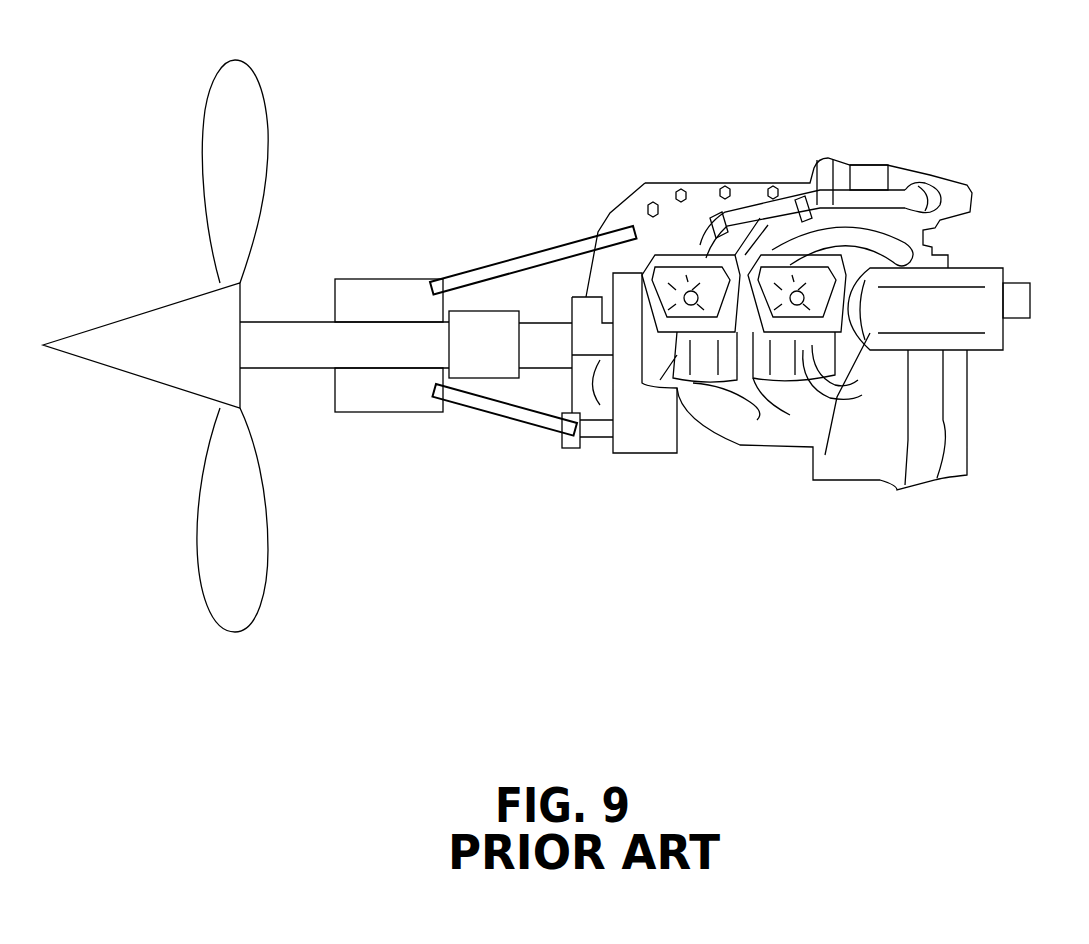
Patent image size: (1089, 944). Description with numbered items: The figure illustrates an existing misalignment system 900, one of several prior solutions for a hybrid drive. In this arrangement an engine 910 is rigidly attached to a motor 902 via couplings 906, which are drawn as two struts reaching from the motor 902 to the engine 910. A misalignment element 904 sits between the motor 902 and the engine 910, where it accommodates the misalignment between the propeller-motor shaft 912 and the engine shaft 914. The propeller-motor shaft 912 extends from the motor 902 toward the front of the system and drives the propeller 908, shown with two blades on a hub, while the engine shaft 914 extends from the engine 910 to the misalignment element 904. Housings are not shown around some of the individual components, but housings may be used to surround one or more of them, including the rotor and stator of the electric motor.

The misalignment system 900 is at (607, 72).
The motor 902 is at (389, 345).
The misalignment element 904 is at (484, 344).
The couplings 906 is at (482, 272).
The propeller 908 is at (217, 108).
The engine 910 is at (796, 165).
The propeller-motor shaft 912 is at (344, 345).
The engine shaft 914 is at (541, 349).